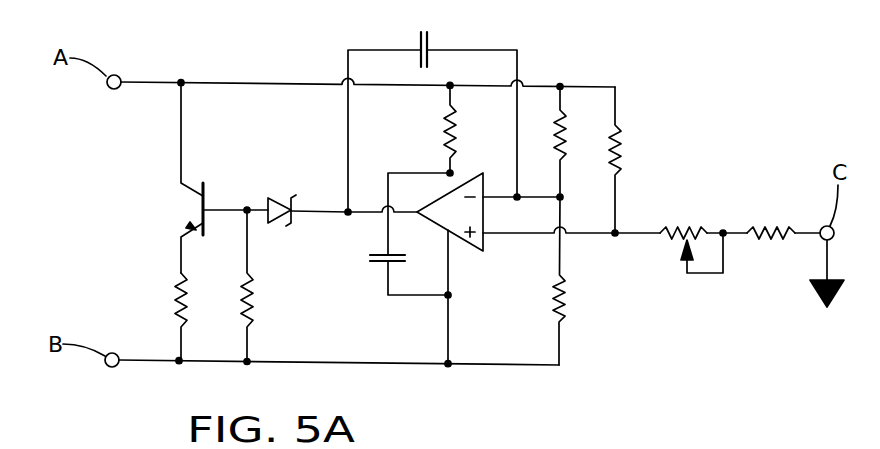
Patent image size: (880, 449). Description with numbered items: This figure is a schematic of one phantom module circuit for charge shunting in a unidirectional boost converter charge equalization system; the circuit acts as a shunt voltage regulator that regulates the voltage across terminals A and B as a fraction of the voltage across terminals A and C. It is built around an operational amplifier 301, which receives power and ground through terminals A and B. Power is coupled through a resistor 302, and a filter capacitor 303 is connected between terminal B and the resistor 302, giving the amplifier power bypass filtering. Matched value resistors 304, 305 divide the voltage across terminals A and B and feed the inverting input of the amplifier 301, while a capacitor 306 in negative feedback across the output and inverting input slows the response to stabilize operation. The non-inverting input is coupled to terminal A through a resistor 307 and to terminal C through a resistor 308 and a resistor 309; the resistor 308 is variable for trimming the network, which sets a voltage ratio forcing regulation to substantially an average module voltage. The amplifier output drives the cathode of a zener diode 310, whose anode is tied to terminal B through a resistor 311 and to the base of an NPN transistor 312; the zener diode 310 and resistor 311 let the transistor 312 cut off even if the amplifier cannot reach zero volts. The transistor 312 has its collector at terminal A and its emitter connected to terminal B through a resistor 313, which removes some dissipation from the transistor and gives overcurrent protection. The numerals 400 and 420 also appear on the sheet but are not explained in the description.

The operational amplifier 301 is at (477, 243).
The resistor 302 is at (445, 130).
The filter capacitor 303 is at (372, 263).
The matched value resistor 304 is at (563, 117).
The matched value resistor 305 is at (563, 290).
The capacitor 306 is at (430, 40).
The resistor 307 is at (618, 128).
The variable resistor 308 is at (680, 230).
The resistor 309 is at (773, 242).
The zener diode 310 is at (276, 194).
The resistor 311 is at (250, 294).
The NPN transistor 312 is at (200, 201).
The resistor 313 is at (176, 296).
The circuit 400 is at (853, 438).
The conductor 420 is at (726, 448).